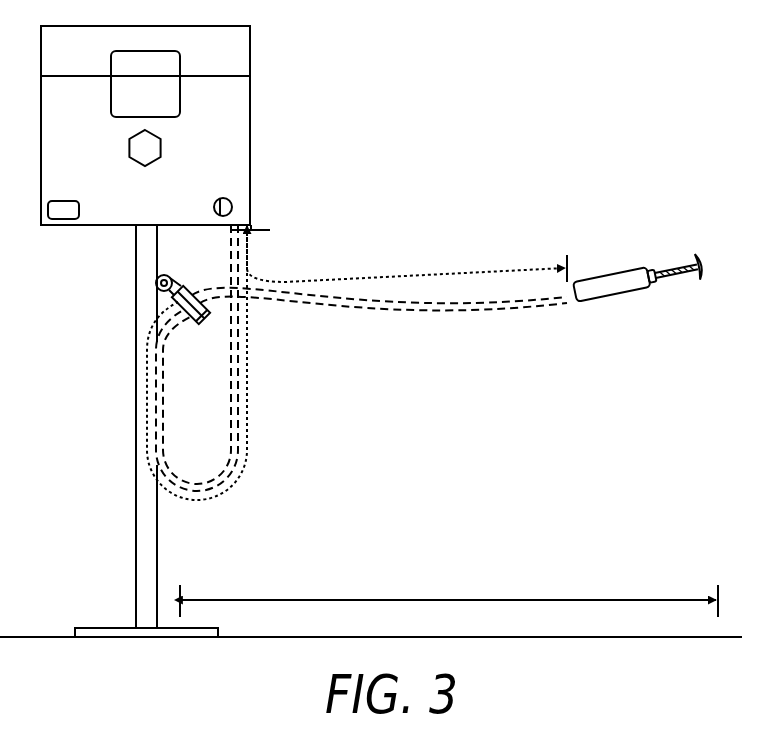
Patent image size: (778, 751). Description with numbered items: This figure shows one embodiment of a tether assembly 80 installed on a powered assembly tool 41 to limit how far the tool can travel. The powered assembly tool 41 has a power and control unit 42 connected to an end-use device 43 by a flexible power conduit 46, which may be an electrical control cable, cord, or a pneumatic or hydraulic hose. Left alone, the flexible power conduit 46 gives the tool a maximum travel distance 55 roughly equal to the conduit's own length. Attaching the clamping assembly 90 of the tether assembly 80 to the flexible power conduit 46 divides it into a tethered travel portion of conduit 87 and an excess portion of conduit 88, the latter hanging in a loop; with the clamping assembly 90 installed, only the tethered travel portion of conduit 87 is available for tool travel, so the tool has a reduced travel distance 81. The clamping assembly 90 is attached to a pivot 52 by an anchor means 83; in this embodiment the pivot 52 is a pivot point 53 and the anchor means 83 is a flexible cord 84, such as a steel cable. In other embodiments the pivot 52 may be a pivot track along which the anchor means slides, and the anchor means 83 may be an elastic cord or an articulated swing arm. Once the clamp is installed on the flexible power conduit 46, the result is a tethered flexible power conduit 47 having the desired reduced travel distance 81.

The powered assembly tool 41 is at (316, 84).
The power and control unit 42 is at (221, 156).
The end-use device 43 is at (613, 299).
The flexible power conduit 46 is at (357, 359).
The tethered flexible power conduit 47 is at (357, 359).
The pivot 52 is at (167, 266).
The pivot point 53 is at (114, 264).
The maximum travel distance 55 is at (487, 272).
The tether assembly 80 is at (567, 320).
The reduced travel distance 81 is at (453, 600).
The anchor means 83 is at (126, 302).
The flexible cord 84 is at (167, 304).
The tethered travel portion of conduit 87 is at (421, 311).
The excess portion of conduit 88 is at (239, 452).
The clamping assembly 90 is at (203, 327).